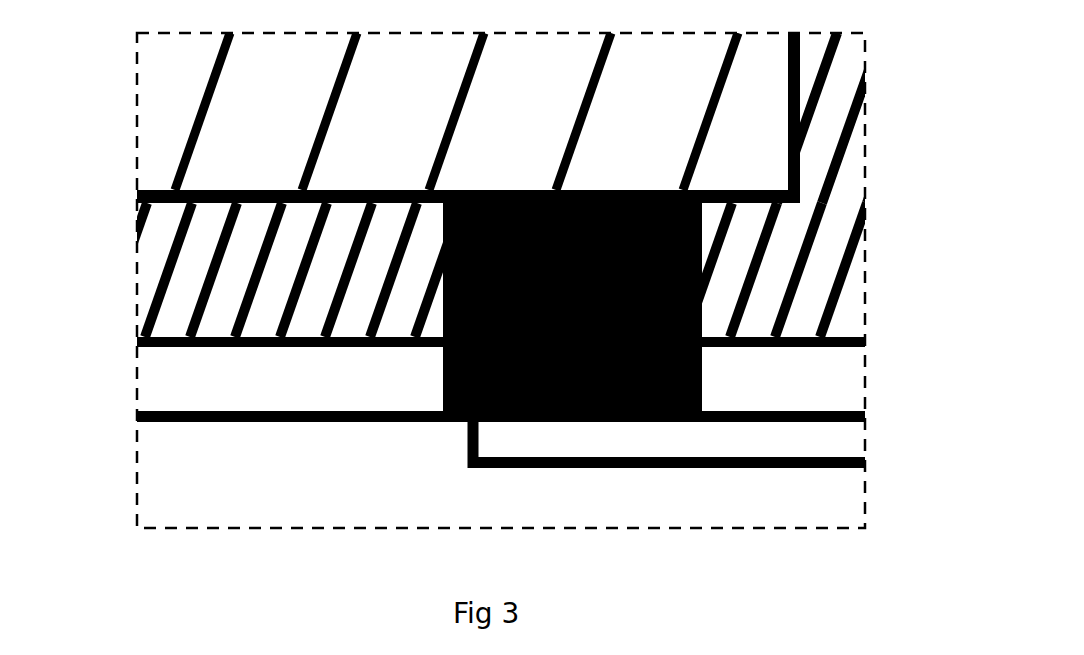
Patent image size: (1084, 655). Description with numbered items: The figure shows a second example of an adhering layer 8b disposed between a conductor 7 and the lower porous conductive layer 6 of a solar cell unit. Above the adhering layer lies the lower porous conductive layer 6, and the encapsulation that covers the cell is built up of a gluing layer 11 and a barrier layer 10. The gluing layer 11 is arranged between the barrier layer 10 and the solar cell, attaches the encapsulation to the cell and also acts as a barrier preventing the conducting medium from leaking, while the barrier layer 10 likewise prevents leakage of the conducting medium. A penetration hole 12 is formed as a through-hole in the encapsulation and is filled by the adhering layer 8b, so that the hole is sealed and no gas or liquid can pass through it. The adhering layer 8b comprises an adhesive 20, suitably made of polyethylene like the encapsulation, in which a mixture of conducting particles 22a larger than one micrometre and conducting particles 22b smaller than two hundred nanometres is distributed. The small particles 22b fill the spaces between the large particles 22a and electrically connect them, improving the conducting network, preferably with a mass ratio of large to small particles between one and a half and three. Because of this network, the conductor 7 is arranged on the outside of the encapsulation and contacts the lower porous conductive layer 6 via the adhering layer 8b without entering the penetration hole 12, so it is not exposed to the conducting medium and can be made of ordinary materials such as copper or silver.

The lower porous conductive layer 6 is at (172, 122).
The gluing layer 11 is at (840, 231).
The adhesive 20 is at (443, 401).
The adhering layer 8b is at (702, 363).
The barrier layer 10 is at (845, 393).
The conductor 7 is at (835, 443).
The penetration hole 12 is at (438, 427).
The conducting particles 22b is at (530, 420).
The conducting particles 22a is at (658, 420).